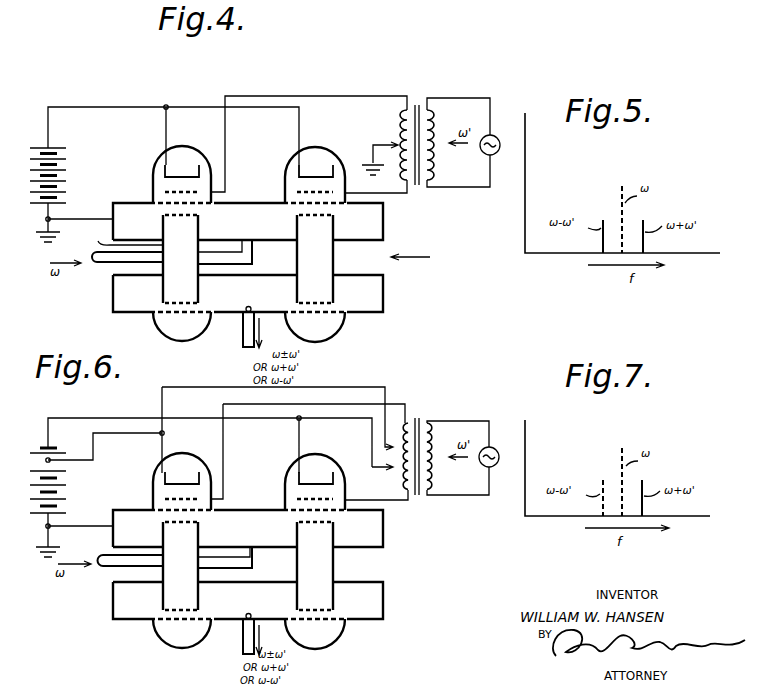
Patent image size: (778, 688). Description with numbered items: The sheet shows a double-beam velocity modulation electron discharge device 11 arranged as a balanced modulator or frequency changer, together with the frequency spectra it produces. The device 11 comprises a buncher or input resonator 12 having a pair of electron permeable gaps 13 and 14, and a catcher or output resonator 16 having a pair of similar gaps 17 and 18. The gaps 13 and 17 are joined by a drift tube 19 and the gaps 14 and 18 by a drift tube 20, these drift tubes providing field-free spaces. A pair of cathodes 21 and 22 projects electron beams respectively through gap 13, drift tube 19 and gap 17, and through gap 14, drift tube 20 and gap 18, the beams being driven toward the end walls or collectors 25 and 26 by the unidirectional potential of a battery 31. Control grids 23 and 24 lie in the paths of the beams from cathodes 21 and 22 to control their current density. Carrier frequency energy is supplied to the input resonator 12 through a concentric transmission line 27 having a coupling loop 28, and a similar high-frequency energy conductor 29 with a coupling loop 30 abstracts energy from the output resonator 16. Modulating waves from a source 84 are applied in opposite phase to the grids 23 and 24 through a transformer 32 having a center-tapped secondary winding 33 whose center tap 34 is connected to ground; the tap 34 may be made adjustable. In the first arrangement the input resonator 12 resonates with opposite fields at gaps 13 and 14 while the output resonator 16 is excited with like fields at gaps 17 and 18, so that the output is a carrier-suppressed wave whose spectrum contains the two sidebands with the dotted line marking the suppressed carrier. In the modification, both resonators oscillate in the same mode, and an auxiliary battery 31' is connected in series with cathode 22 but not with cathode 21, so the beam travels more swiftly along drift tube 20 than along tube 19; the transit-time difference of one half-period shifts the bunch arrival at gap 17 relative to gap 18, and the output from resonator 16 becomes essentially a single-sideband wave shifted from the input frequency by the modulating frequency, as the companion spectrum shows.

In FIG. 4, the double-beam velocity modulation electron discharge device 11 is at (422, 257).
In FIG. 4, the input resonator 12 is at (385, 228).
In FIG. 6, the input resonator 12 is at (265, 528).
In FIG. 4, the electron permeable gap 13 is at (163, 214).
In FIG. 6, the electron permeable gap 13 is at (164, 565).
In FIG. 4, the electron permeable gap 14 is at (297, 214).
In FIG. 6, the electron permeable gap 14 is at (299, 565).
In FIG. 4, the output resonator 16 is at (129, 313).
In FIG. 6, the output resonator 16 is at (265, 600).
In FIG. 4, the gap 17 is at (163, 306).
In FIG. 6, the gap 17 is at (163, 605).
In FIG. 4, the gap 18 is at (340, 308).
In FIG. 6, the gap 18 is at (331, 605).
In FIG. 4, the drift tube 19 is at (120, 241).
In FIG. 6, the drift tube 19 is at (224, 544).
In FIG. 4, the drift tube 20 is at (334, 250).
In FIG. 6, the drift tube 20 is at (351, 565).
In FIG. 4, the cathode 21 is at (186, 168).
In FIG. 6, the cathode 21 is at (182, 472).
In FIG. 4, the cathode 22 is at (319, 175).
In FIG. 6, the cathode 22 is at (318, 476).
In FIG. 4, the control grid 23 is at (152, 188).
In FIG. 6, the control grid 23 is at (158, 486).
In FIG. 4, the control grid 24 is at (285, 192).
In FIG. 6, the control grid 24 is at (296, 479).
In FIG. 4, the collector 25 is at (203, 336).
In FIG. 6, the collector 25 is at (182, 633).
In FIG. 4, the collector 26 is at (338, 338).
In FIG. 6, the collector 26 is at (315, 634).
In FIG. 4, the concentric transmission line 27 is at (106, 264).
In FIG. 6, the concentric transmission line 27 is at (124, 574).
In FIG. 4, the coupling loop 28 is at (250, 237).
In FIG. 4, the high-frequency energy conductor 29 is at (267, 333).
In FIG. 6, the high-frequency energy conductor 29 is at (231, 637).
In FIG. 4, the coupling loop 30 is at (251, 307).
In FIG. 4, the battery 31 is at (64, 166).
In FIG. 6, the battery 31 is at (65, 492).
In FIG. 6, the auxiliary battery 31' is at (41, 434).
In FIG. 4, the transformer 32 is at (418, 104).
In FIG. 6, the transformer 32 is at (423, 456).
In FIG. 4, the center-tapped secondary winding 33 is at (397, 113).
In FIG. 6, the center-tapped secondary winding 33 is at (405, 456).
In FIG. 4, the center tap 34 is at (391, 142).
In FIG. 4, the source of modulating waves 84 is at (494, 132).
In FIG. 6, the source of modulating waves 84 is at (492, 446).